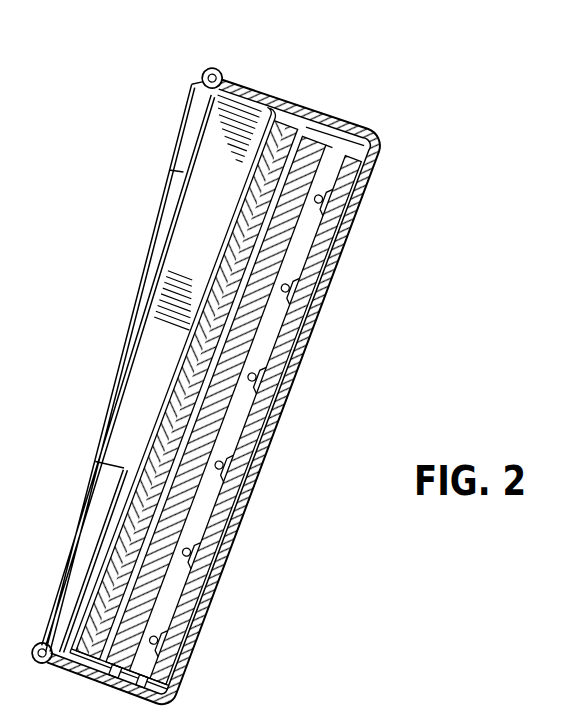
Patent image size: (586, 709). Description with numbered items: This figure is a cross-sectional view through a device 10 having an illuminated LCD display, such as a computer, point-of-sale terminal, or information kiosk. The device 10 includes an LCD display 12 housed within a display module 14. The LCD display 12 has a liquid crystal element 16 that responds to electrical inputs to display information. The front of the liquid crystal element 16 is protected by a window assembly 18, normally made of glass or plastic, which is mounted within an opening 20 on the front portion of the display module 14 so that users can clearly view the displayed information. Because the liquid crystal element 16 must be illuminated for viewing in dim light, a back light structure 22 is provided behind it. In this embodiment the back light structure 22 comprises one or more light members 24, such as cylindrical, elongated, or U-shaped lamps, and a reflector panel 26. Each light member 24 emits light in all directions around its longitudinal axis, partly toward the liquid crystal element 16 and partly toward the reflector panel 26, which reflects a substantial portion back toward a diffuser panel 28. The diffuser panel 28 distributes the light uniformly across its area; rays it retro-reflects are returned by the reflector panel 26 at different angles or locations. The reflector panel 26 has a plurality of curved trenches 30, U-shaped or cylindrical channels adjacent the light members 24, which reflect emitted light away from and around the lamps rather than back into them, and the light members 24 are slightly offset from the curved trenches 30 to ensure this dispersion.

The device 10 is at (266, 637).
The LCD display 12 is at (178, 330).
The display module 14 is at (133, 157).
The liquid crystal element 16 is at (333, 160).
The window assembly 18 is at (289, 108).
The opening 20 is at (247, 177).
The back light structure 22 is at (364, 138).
The light member 24 is at (263, 366).
The reflector panel 26 is at (372, 150).
The diffuser panel 28 is at (224, 423).
The curved trenches 30 is at (257, 377).